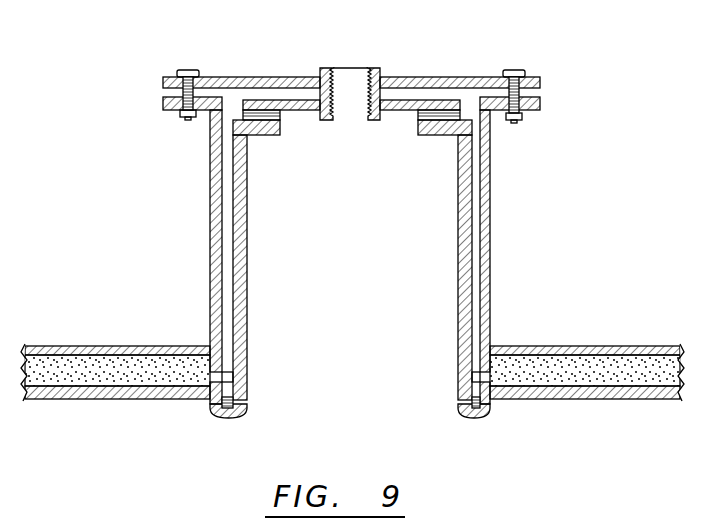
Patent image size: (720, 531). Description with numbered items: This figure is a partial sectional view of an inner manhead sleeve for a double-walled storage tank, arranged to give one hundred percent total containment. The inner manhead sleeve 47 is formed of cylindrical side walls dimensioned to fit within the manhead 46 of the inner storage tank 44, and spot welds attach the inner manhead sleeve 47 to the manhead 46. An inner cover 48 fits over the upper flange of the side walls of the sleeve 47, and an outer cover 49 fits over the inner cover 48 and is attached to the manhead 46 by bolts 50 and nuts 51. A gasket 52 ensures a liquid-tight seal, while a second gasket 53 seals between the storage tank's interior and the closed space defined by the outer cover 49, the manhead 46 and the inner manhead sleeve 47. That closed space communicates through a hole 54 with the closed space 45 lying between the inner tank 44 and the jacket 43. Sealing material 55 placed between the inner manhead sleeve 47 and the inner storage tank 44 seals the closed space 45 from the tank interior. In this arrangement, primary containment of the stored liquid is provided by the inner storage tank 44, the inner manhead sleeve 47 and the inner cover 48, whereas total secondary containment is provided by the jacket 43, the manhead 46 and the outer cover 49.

The jacket 43 is at (575, 346).
The inner storage tank 44 is at (615, 399).
The closed space 45 is at (640, 358).
The manhead 46 is at (490, 254).
The inner manhead sleeve 47 is at (458, 240).
The inner cover 48 is at (386, 120).
The outer cover 49 is at (440, 77).
The bolts 50 is at (520, 70).
The nuts 51 is at (522, 118).
The gasket 52 is at (540, 100).
The second gasket 53 is at (413, 118).
The hole 54 is at (497, 372).
The sealing material 55 is at (487, 413).